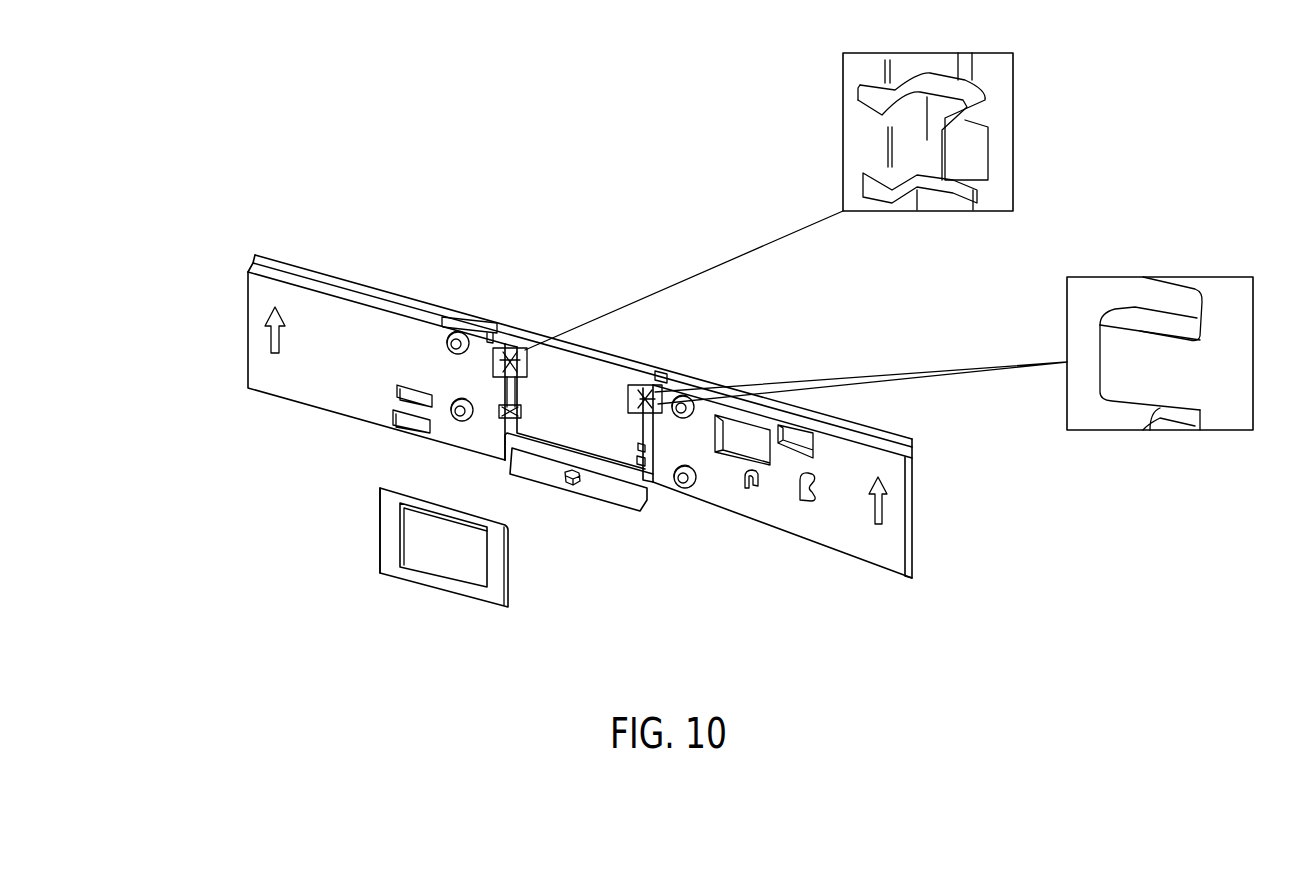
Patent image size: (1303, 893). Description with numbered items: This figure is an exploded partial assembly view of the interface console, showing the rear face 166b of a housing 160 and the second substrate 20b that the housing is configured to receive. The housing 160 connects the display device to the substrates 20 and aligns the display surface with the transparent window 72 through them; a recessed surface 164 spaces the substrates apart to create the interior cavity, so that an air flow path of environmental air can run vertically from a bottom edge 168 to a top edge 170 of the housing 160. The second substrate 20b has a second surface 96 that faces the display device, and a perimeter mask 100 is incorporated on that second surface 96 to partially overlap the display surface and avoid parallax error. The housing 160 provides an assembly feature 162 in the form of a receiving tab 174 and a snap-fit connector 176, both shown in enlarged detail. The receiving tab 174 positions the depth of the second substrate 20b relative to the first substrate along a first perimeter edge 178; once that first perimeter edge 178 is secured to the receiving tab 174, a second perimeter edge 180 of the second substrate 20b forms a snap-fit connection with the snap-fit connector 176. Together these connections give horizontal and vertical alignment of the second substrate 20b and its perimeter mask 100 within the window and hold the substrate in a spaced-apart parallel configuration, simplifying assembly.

The housing 160 is at (272, 312).
The assembly feature 162 is at (860, 83).
The recessed surface 164 is at (515, 350).
The rear face 166b is at (286, 383).
The bottom edge 168 is at (593, 465).
The top edge 170 is at (587, 363).
The receiving tab 174 is at (752, 606).
The snap-fit connector 176 is at (500, 415).
The first perimeter edge 178 is at (377, 542).
The second perimeter edge 180 is at (510, 573).
The substrates 20 is at (426, 566).
The second substrate 20b is at (393, 523).
The second surface 96 is at (498, 548).
The transparent window 72 is at (463, 560).
The perimeter mask 100 is at (390, 568).